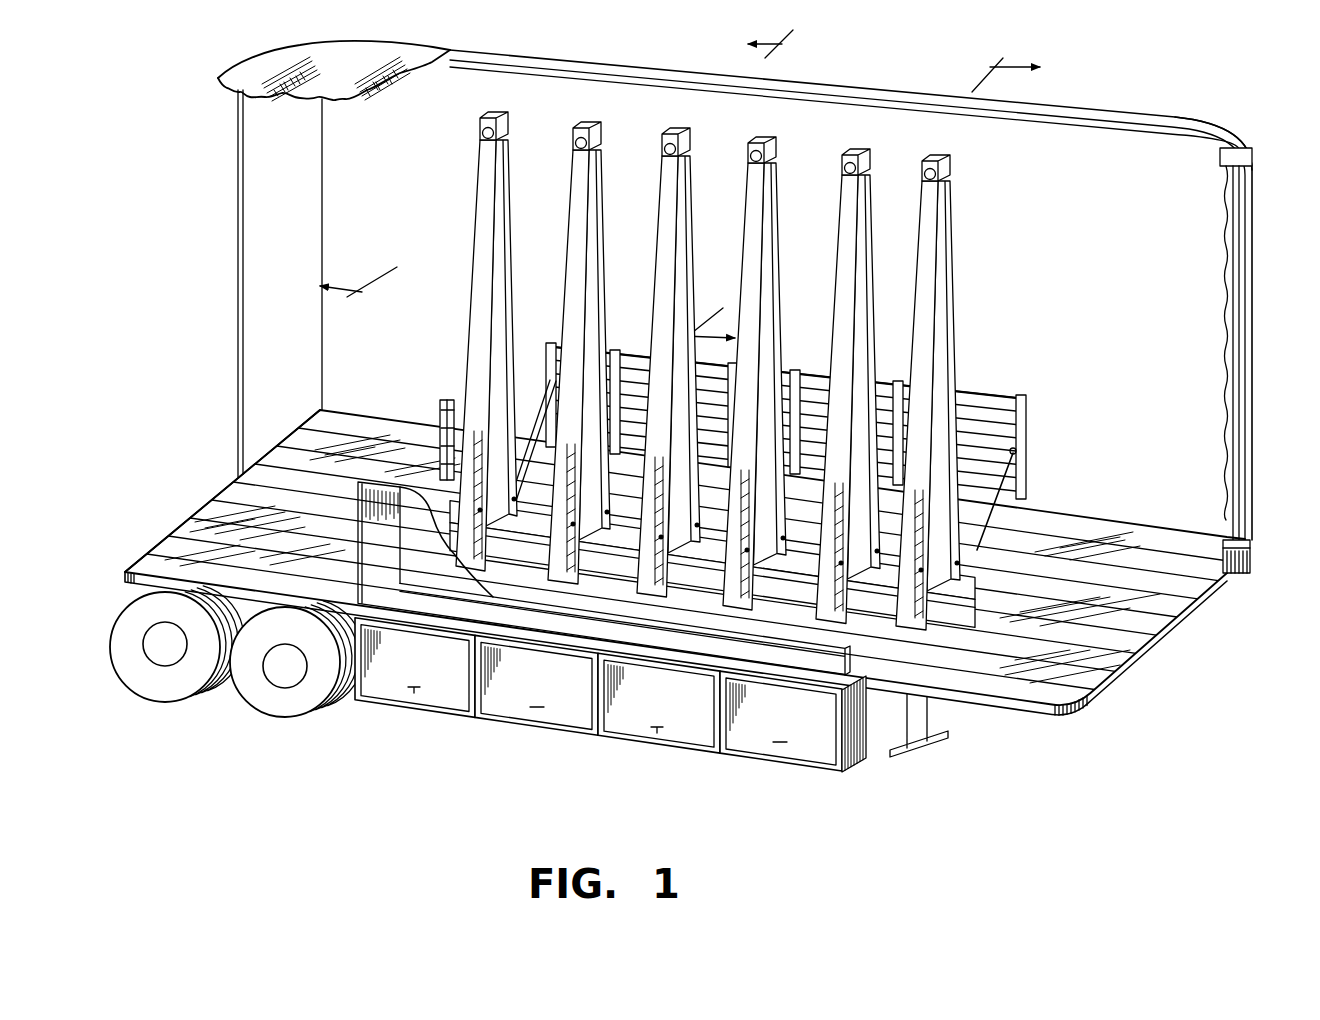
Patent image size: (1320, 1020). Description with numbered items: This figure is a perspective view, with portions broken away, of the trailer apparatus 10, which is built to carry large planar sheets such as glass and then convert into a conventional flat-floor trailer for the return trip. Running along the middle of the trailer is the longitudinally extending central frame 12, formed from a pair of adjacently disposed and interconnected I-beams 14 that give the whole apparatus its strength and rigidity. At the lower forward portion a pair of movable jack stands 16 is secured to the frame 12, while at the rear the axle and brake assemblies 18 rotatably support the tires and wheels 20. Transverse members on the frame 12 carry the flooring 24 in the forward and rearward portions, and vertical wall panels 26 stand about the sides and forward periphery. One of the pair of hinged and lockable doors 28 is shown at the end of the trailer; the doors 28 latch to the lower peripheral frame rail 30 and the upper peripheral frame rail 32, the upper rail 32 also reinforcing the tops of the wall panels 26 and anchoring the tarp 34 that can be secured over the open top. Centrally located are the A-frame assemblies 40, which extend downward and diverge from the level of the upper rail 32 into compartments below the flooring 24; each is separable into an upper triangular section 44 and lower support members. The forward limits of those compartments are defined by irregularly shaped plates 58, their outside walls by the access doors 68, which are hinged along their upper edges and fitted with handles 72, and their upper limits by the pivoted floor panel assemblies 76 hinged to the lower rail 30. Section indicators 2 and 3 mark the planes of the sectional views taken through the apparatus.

The trailer apparatus 10 is at (1207, 103).
The central frame 12 is at (618, 573).
The I-beams 14 is at (712, 537).
The jack stands 16 is at (950, 733).
The axle and brake assemblies 18 is at (165, 640).
The tires and wheels 20 is at (132, 652).
The flooring 24 is at (208, 522).
The vertical wall panels 26 is at (1242, 447).
The hinged and lockable doors 28 is at (253, 158).
The lower peripheral frame rail 30 is at (238, 477).
The upper peripheral frame rail 32 is at (514, 58).
The tarp 34 is at (383, 50).
The A-frame assemblies 40 is at (960, 212).
The upper triangular section 44 is at (570, 227).
The irregularly shaped plates 58 is at (863, 745).
The access doors 68 is at (430, 668).
The handles 72 is at (411, 692).
The pivoted floor panel assemblies 76 is at (1027, 442).
The section line 2- 2 is at (560, 174).
The section line 3- 3 is at (861, 196).